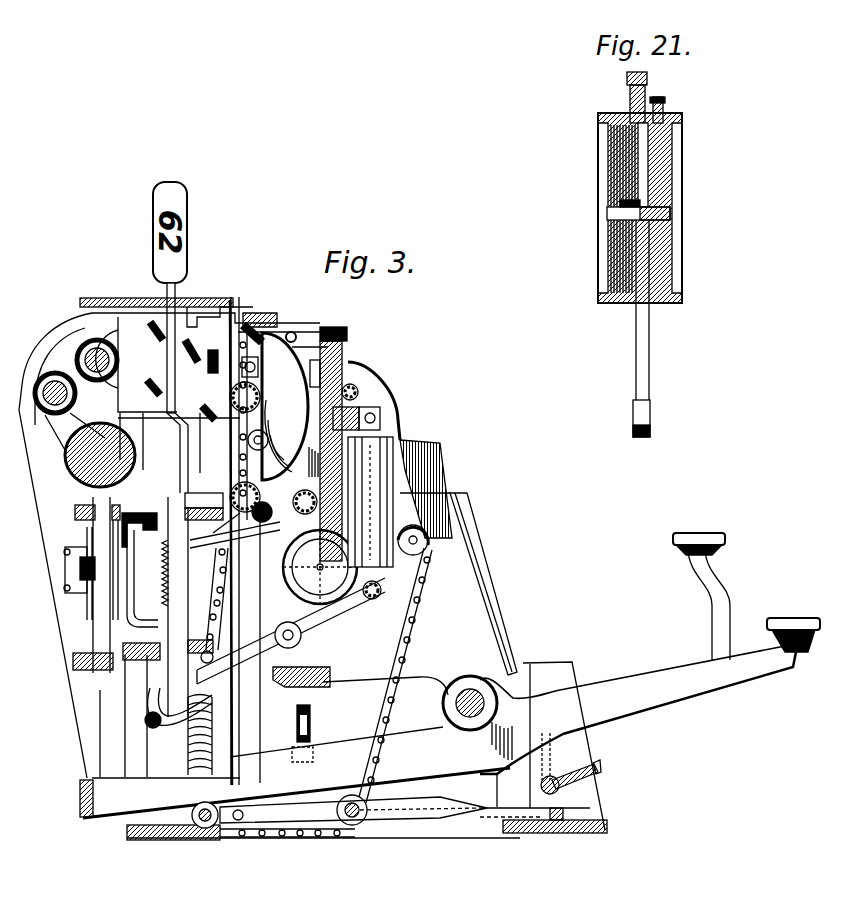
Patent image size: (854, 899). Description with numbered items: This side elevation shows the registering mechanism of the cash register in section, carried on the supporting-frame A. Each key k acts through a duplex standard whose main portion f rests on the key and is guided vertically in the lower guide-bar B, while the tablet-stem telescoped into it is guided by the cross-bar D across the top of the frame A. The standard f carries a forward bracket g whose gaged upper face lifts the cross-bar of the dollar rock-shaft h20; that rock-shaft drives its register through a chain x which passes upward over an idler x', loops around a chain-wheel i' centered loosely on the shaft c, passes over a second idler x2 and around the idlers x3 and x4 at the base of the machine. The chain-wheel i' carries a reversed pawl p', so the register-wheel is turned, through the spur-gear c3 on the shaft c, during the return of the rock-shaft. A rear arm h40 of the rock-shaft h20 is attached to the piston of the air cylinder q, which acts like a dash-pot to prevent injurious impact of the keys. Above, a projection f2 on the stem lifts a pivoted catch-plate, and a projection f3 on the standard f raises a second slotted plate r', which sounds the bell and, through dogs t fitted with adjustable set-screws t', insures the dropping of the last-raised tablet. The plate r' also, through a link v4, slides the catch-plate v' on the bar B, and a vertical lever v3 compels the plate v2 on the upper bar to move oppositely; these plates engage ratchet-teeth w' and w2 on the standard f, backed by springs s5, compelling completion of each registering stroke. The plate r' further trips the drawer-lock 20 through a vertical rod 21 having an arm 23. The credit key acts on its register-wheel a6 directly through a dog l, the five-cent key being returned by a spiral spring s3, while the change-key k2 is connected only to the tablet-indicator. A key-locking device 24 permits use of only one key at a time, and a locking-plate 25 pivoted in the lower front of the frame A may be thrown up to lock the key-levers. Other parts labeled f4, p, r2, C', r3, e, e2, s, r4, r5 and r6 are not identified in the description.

In FIG. 3, the handle stem arm f4 is at (166, 290).
In FIG. 3, the guide cross-bar D is at (187, 298).
In FIG. 3, the vertical rod 21 is at (236, 300).
In FIG. 3, the spiral spring s3 is at (250, 340).
In FIG. 3, the pawl p is at (296, 312).
In FIG. 3, the register-wheel a6 is at (350, 392).
In FIG. 3, the arm 23 is at (242, 388).
In FIG. 3, the lever-dog t is at (150, 360).
In FIG. 3, the set-screw t' is at (208, 345).
In FIG. 3, the second slotted plate r' is at (144, 396).
In FIG. 3, the roller link r2 is at (210, 378).
In FIG. 3, the stem projection f2 is at (182, 427).
In FIG. 3, the link v4 is at (232, 437).
In FIG. 3, the idler x' is at (280, 428).
In FIG. 3, the standard projection f3 is at (205, 486).
In FIG. 3, the bracket C' is at (160, 495).
In FIG. 3, the roller bracket r3 is at (87, 518).
In FIG. 3, the sliding catch-plate v2 is at (190, 518).
In FIG. 3, the vertical lever v3 is at (168, 555).
In FIG. 3, the nut e is at (203, 525).
In FIG. 3, the link e2 is at (230, 540).
In FIG. 3, the upper ratchet-teeth w2 is at (187, 567).
In FIG. 3, the dog l is at (217, 593).
In FIG. 3, the lever s is at (277, 597).
In FIG. 3, the key k is at (267, 627).
In FIG. 3, the standard f is at (180, 612).
In FIG. 3, the sliding catch-plate v' is at (98, 628).
In FIG. 3, the spring s5 is at (123, 640).
In FIG. 3, the lower guide-bar B is at (108, 660).
In FIG. 3, the roller shaft r4 is at (125, 672).
In FIG. 3, the roller shaft bearing r5 is at (143, 700).
In FIG. 3, the roller link r6 is at (147, 720).
In FIG. 3, the lower ratchet-teeth w' is at (141, 741).
In FIG. 3, the bracket g is at (213, 723).
In FIG. 3, the drawer-lock 20 is at (192, 830).
In FIG. 3, the fourth idler x4 is at (212, 838).
In FIG. 3, the shaft c is at (322, 569).
In FIG. 3, the chain-wheel i' is at (322, 581).
In FIG. 3, the spur-gear c3 is at (382, 590).
In FIG. 3, the second idler x2 is at (440, 556).
In FIG. 3, the rear extending arm h40 is at (353, 628).
In FIG. 3, the rock-shaft h20 is at (333, 657).
In FIG. 3, the pawl p' is at (383, 649).
In FIG. 3, the chain x is at (423, 654).
In FIG. 3, the supporting-frame A is at (451, 658).
In FIG. 3, the key-locking device 24 is at (310, 707).
In FIG. 3, the change-key k2 is at (343, 755).
In FIG. 3, the third idler x3 is at (340, 805).
In FIG. 3, the locking-plate 25 is at (600, 767).
In FIG. 3, the regulating cylinder q is at (383, 476).
In FIG. 21, the regulating cylinder q is at (703, 233).